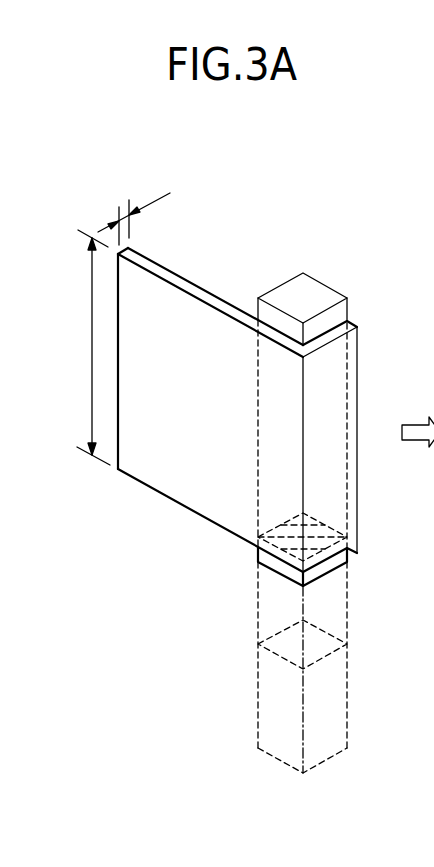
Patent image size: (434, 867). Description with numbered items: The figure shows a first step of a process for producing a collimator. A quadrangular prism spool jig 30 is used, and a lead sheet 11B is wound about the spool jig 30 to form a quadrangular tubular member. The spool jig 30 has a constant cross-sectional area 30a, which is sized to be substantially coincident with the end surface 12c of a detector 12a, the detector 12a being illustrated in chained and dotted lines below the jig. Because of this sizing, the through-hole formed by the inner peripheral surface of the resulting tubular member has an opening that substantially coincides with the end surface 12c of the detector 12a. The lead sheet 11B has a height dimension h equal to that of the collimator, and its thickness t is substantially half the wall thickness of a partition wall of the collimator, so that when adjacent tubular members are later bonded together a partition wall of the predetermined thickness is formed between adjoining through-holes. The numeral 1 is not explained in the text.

The lead sheet 11B is at (183, 280).
The spool jig 30 is at (315, 292).
The cross-sectional area 30a is at (306, 530).
The detector 12a is at (325, 710).
The end surface 12c is at (308, 635).
The thickness t is at (134, 211).
The height dimension h is at (91, 347).
The device 1 is at (418, 350).